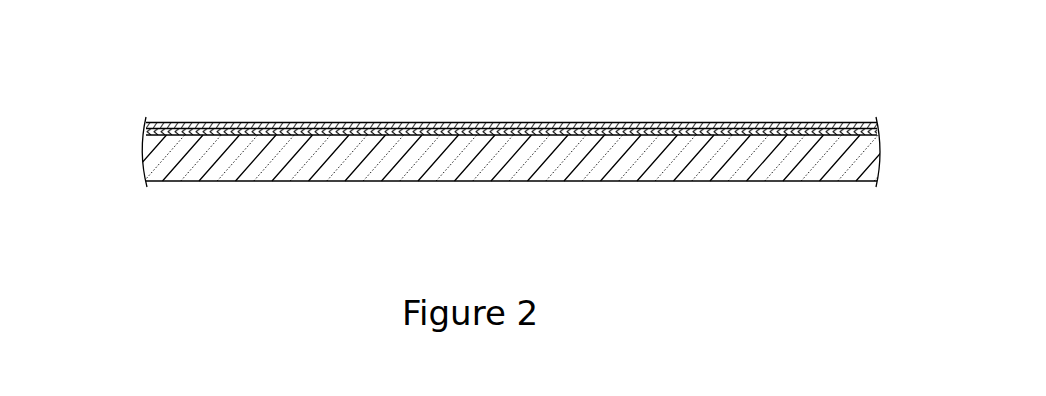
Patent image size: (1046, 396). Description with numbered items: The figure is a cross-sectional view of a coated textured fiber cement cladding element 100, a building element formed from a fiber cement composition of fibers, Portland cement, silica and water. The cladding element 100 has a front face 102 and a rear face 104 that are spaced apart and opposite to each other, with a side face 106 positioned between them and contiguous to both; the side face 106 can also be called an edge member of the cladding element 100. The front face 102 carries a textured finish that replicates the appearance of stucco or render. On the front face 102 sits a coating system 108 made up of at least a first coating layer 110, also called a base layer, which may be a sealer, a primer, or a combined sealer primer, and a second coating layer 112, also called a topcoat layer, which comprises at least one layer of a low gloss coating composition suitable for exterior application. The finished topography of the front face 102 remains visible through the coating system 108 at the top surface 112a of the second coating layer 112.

The fiber cement cladding element 100 is at (837, 199).
The front face 102 is at (520, 192).
The rear face 104 is at (430, 182).
The side face 106 is at (217, 157).
The coating system 108 is at (507, 116).
The first coating layer 110 is at (147, 137).
The second coating layer 112 is at (145, 130).
The top surface 112a is at (187, 122).